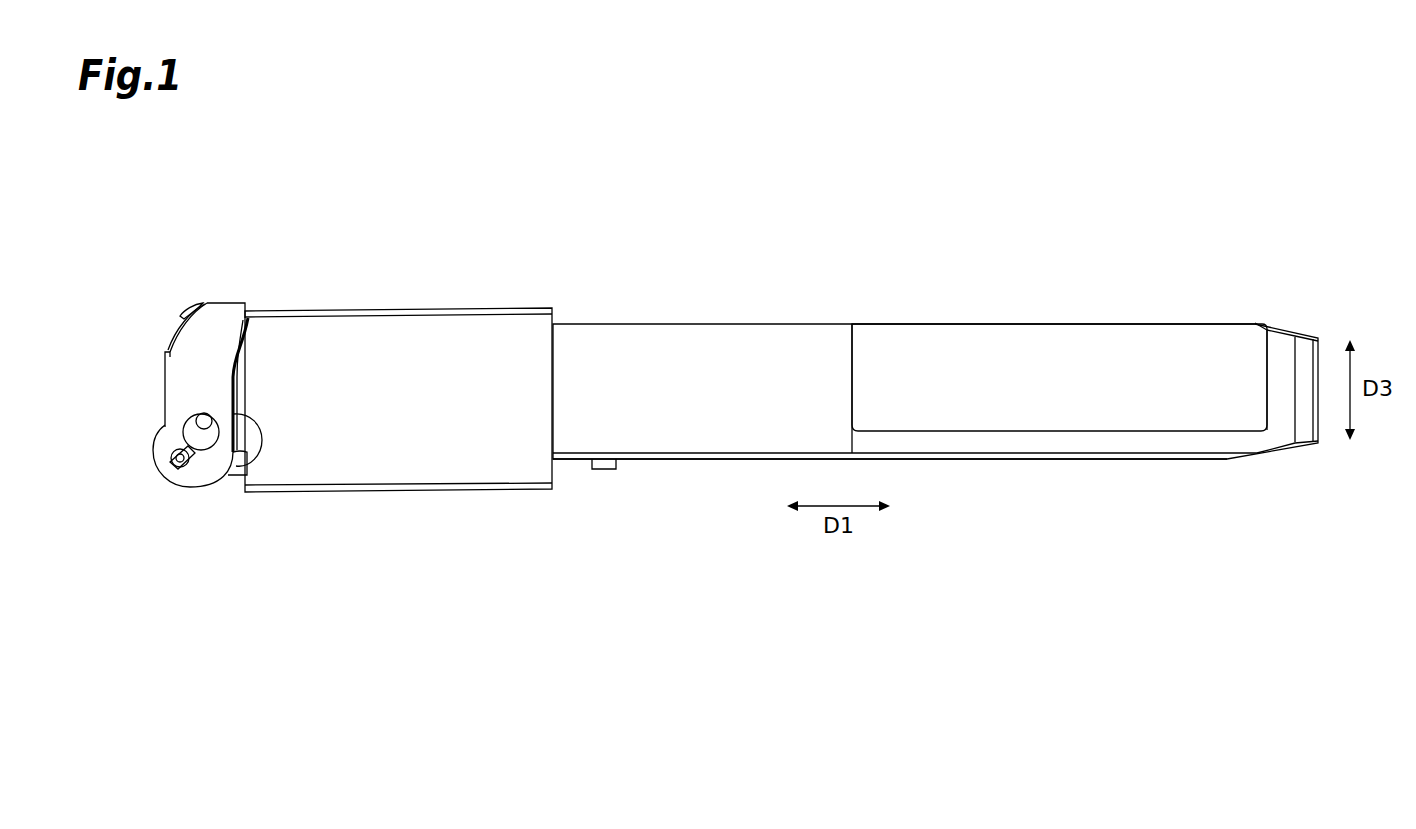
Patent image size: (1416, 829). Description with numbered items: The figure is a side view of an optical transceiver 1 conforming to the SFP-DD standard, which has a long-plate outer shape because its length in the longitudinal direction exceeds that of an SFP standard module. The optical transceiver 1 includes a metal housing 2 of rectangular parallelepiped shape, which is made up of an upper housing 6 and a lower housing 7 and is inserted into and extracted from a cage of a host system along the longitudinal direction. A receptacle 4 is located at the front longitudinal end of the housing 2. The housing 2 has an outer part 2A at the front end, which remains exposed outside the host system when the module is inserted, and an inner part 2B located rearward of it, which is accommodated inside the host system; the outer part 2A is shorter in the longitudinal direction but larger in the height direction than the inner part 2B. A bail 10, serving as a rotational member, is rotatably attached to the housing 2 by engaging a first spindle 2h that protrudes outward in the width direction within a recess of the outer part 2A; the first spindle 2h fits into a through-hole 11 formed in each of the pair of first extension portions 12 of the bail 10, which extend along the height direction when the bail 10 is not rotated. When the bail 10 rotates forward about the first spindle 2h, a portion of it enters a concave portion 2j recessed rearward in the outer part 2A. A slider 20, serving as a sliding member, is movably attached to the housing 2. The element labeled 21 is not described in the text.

The optical transceiver 1 is at (866, 190).
The housing 2 is at (706, 316).
The outer part 2A is at (341, 332).
The inner part 2B is at (813, 334).
The first spindle 2h is at (193, 430).
The concave portion 2j is at (252, 447).
The receptacle 4 is at (276, 332).
The upper housing 6 is at (966, 334).
The lower housing 7 is at (980, 442).
The bail 10 is at (204, 312).
The through-hole 11 is at (213, 420).
The first extension portion 12 is at (185, 343).
The slider 20 is at (228, 487).
The roller 21 is at (180, 465).